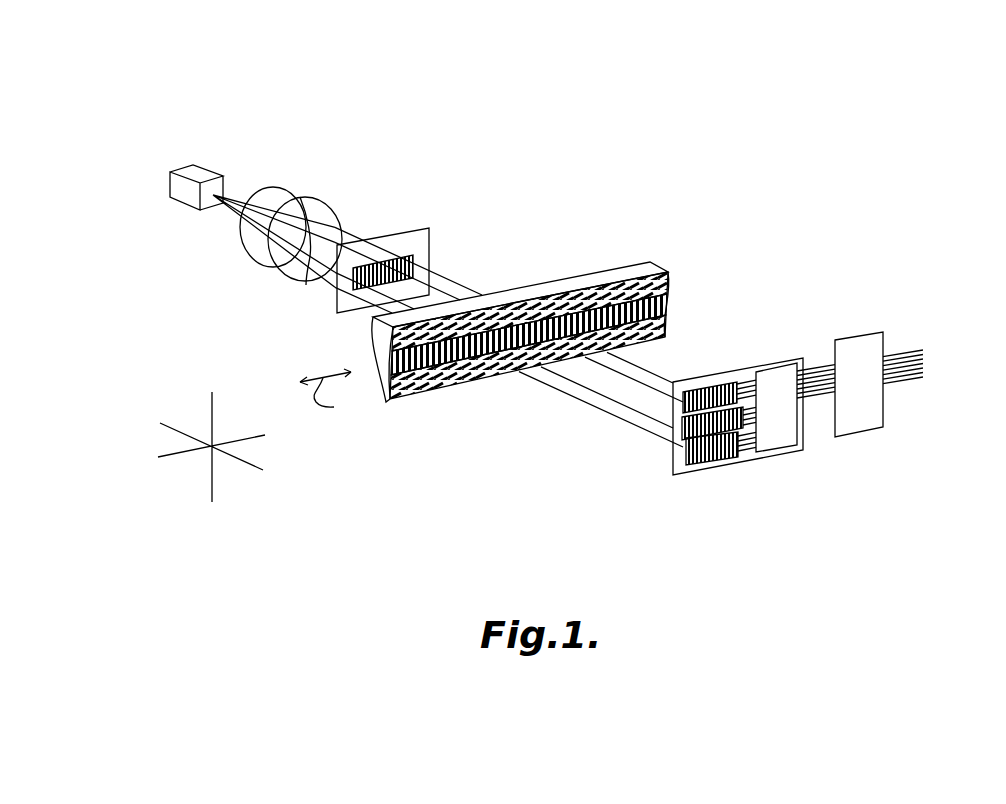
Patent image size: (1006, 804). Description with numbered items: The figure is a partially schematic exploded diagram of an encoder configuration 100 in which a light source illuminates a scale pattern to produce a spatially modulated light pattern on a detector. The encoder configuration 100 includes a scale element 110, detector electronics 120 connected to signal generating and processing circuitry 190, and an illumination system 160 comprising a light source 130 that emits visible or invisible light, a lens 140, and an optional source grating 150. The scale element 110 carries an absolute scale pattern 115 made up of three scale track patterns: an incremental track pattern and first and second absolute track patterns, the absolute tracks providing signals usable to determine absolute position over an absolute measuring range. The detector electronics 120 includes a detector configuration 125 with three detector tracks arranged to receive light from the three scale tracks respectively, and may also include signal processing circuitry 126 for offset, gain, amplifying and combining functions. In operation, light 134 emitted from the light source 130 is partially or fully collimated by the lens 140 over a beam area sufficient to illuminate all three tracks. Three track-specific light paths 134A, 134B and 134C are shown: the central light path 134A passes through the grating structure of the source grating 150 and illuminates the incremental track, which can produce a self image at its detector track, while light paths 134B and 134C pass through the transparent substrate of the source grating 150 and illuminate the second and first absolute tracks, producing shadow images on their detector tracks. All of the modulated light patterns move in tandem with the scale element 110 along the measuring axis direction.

The encoder configuration 100 is at (927, 88).
The scale element 110 is at (603, 252).
The absolute scale pattern 115 is at (672, 282).
The detector electronics 120 is at (708, 378).
The detector configuration 125 is at (683, 399).
The signal processing circuitry 126 is at (762, 371).
The light source 130 is at (203, 173).
The light 134 is at (246, 195).
The light path 134A is at (288, 283).
The light path 134B is at (278, 263).
The light path 134C is at (306, 285).
The lens 140 is at (262, 205).
The source grating 150 is at (398, 233).
The illumination system 160 is at (548, 133).
The signal generating and processing circuitry 190 is at (840, 340).